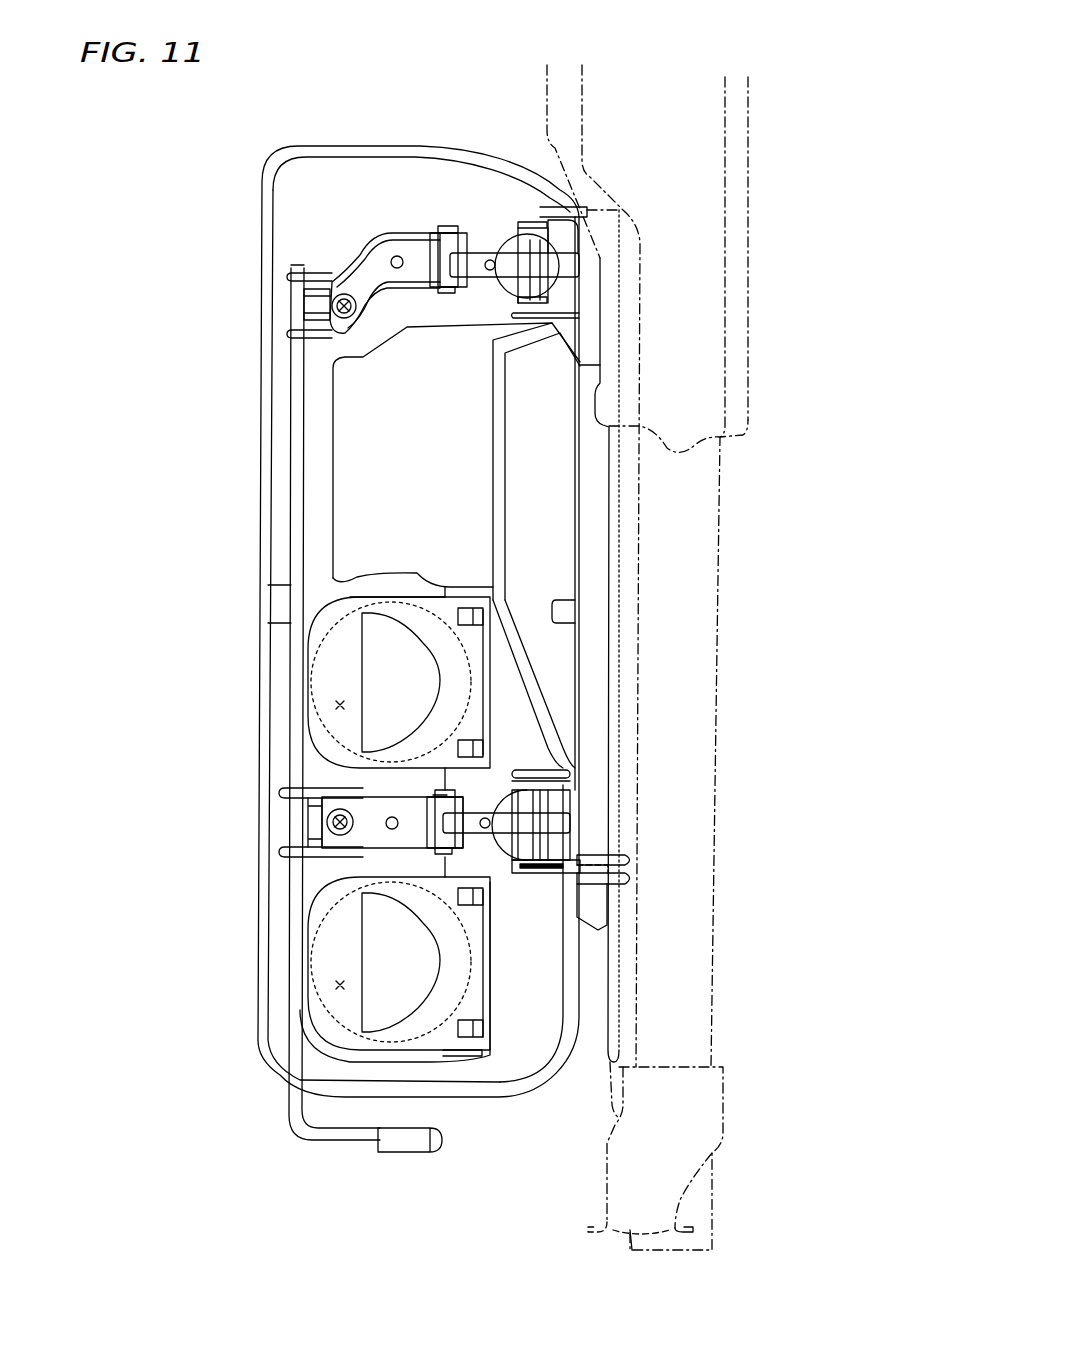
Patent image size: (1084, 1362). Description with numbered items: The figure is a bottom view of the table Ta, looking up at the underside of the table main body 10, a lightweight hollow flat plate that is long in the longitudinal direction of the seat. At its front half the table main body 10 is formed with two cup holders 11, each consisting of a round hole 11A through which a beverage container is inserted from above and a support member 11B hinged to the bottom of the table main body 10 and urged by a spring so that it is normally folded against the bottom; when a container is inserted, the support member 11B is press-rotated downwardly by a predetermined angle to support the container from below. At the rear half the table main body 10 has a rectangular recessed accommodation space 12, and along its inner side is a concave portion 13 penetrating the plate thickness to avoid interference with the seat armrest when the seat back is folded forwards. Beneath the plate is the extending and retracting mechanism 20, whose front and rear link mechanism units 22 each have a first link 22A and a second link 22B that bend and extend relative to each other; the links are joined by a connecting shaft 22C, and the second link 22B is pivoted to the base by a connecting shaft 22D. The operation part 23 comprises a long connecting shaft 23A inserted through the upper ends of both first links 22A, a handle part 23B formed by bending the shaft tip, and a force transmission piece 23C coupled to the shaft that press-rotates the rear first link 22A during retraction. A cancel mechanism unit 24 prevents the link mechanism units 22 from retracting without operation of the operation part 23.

The table Ta is at (232, 139).
The table main body 10 is at (258, 242).
The cup holder 11 is at (153, 632).
The round hole 11A is at (338, 705).
The support member 11B is at (338, 665).
The recessed accommodation space 12 is at (395, 457).
The concave portion 13 is at (560, 507).
The extending and retracting mechanism 20 is at (413, 200).
The link mechanism unit 22 is at (383, 229).
The first link 22A is at (360, 282).
The second link 22B is at (478, 256).
The connecting shaft 22C is at (447, 292).
The connecting shaft 22D is at (532, 237).
The operation part 23 is at (286, 1142).
The connecting shaft 23A is at (300, 511).
The handle part 23B is at (407, 1155).
The force transmission piece 23C is at (317, 305).
The cancel mechanism unit 24 is at (281, 320).